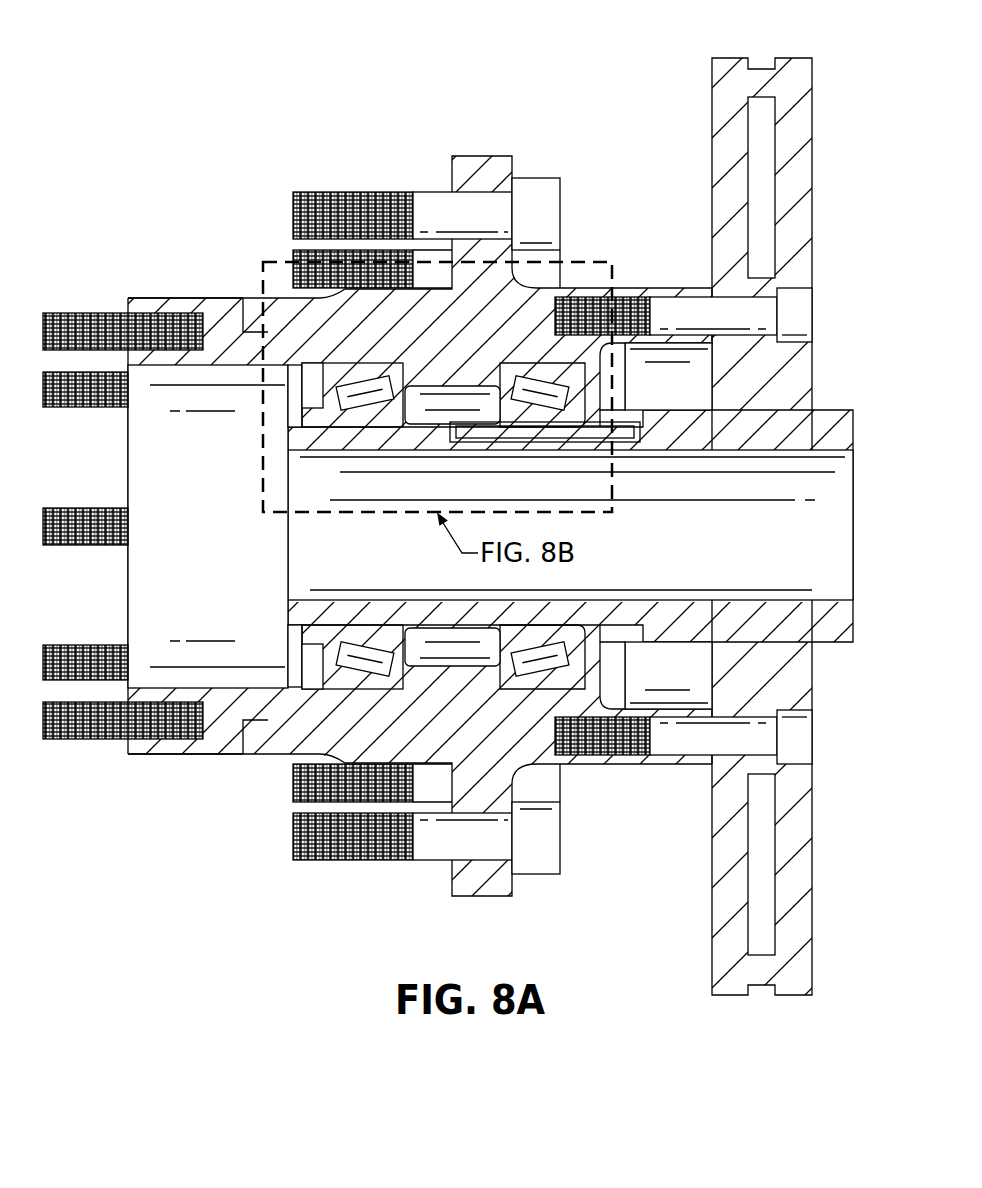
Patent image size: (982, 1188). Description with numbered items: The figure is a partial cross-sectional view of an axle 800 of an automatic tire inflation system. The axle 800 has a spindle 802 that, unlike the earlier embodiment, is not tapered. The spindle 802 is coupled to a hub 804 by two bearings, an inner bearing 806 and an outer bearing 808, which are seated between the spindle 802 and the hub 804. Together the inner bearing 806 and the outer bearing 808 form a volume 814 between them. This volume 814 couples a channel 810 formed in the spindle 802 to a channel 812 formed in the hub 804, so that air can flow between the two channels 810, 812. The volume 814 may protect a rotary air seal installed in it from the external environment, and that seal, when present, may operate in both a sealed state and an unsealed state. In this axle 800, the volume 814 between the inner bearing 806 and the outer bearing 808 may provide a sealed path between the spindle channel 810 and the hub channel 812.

The axle 800 is at (222, 125).
The spindle 802 is at (846, 410).
The hub 804 is at (205, 297).
The inner bearing 806 is at (513, 370).
The outer bearing 808 is at (345, 368).
The channel 810 is at (637, 443).
The channel 812 is at (387, 300).
The volume 814 is at (428, 412).